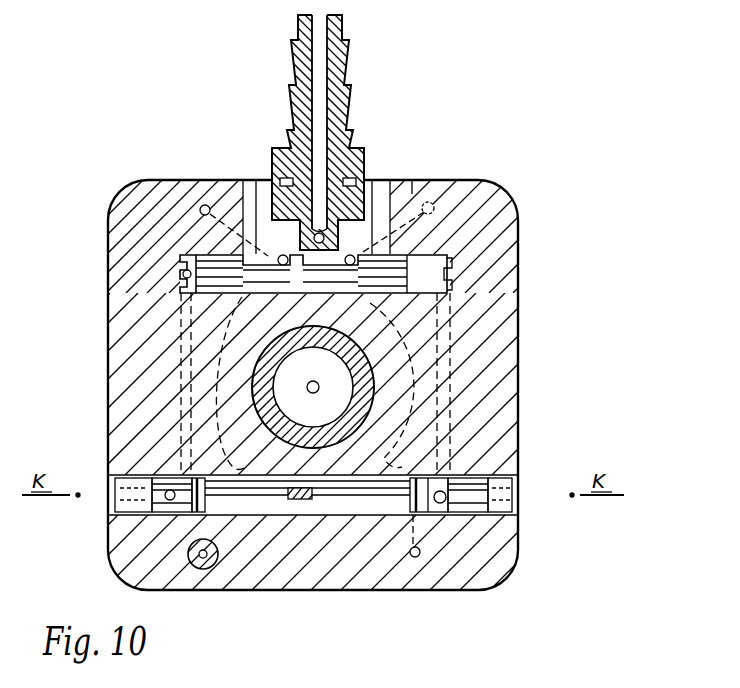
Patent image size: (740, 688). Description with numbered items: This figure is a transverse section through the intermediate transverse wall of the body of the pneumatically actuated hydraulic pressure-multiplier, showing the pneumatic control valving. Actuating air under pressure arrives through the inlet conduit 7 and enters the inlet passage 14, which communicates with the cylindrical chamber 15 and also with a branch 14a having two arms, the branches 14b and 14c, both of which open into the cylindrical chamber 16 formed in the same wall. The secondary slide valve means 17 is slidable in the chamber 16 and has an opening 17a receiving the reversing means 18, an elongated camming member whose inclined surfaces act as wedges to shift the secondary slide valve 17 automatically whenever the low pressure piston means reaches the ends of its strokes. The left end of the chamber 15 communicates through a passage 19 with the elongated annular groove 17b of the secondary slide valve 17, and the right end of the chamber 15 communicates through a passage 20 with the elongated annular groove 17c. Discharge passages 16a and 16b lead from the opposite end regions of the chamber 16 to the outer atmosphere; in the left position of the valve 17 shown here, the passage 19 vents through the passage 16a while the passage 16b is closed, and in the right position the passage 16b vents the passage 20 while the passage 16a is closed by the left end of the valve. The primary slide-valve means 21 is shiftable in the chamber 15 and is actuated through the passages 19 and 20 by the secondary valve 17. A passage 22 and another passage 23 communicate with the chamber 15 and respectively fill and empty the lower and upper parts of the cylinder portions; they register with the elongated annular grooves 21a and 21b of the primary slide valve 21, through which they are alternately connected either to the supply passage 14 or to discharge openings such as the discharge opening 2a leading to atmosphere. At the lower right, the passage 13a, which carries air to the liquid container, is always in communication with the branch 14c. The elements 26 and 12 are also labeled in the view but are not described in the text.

The inlet conduit 7 is at (300, 74).
The branch 14a is at (290, 246).
The inlet passage 14 is at (345, 205).
The passage 22 is at (204, 204).
The discharge opening 2a is at (250, 186).
The sleeve wall 26 is at (381, 197).
The elongated annular groove 21b is at (412, 180).
The passage 23 is at (432, 203).
The primary slide-valve means 21 is at (187, 268).
The elongated annular groove 21a is at (232, 300).
The cylindrical chamber 15 is at (432, 283).
The passage 20 is at (453, 350).
The passage 19 is at (182, 368).
The branch 14b is at (222, 346).
The branch 14c is at (437, 390).
The cylindrical chamber 16 is at (500, 492).
The discharge passage 16a is at (118, 500).
The discharge passage 16b is at (510, 506).
The secondary slide valve means 17 is at (384, 511).
The opening 17a is at (280, 498).
The elongated annular groove 17b is at (120, 480).
The elongated annular groove 17c is at (455, 478).
The reversing means 18 is at (303, 500).
The plug 12 is at (210, 566).
The passage 13a is at (415, 560).